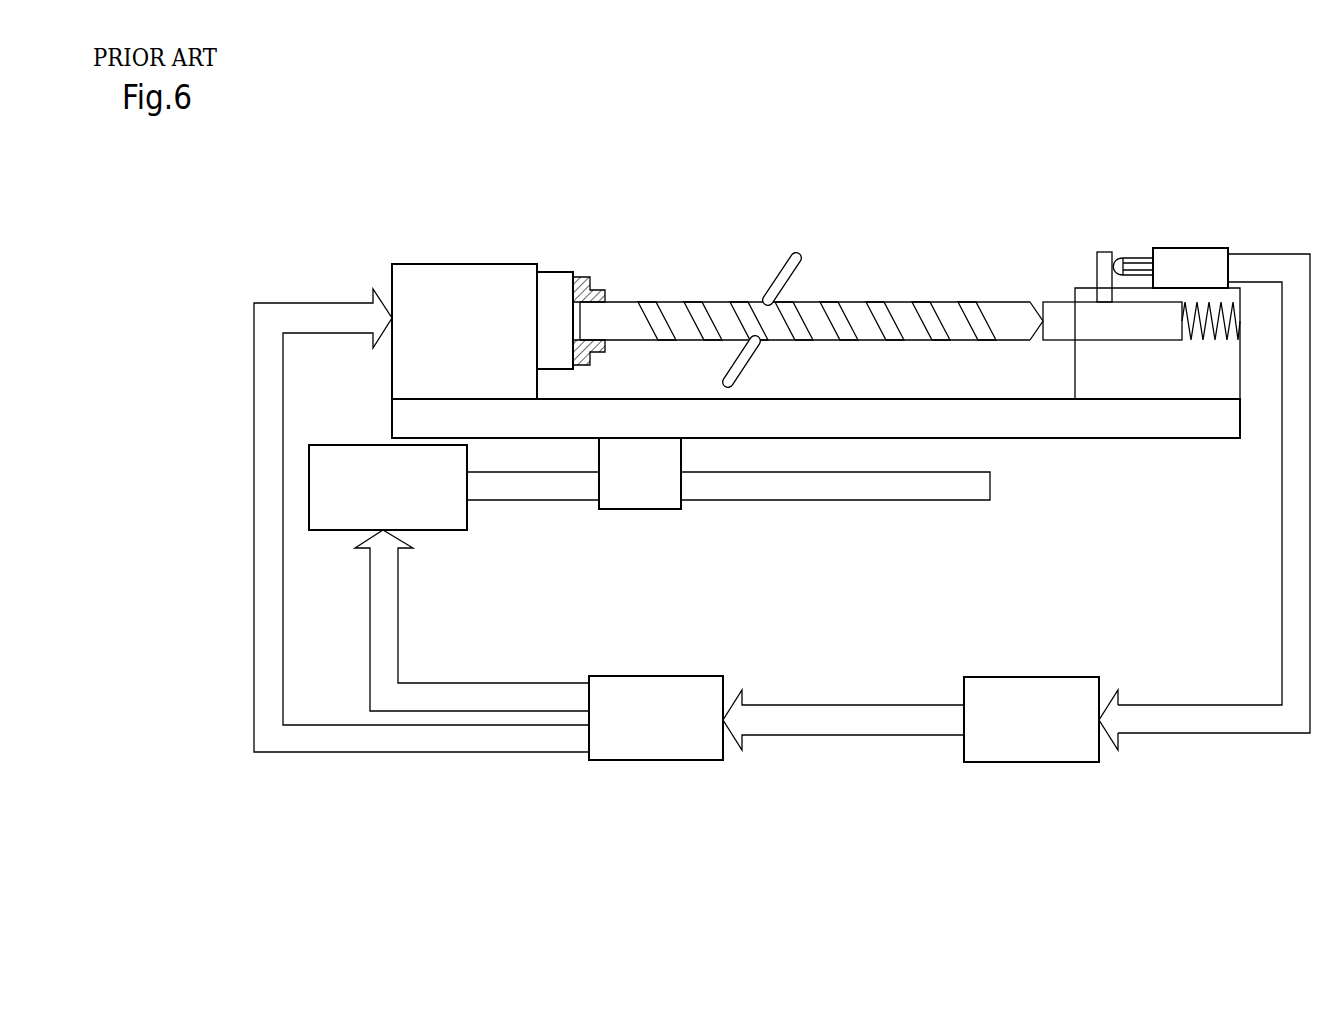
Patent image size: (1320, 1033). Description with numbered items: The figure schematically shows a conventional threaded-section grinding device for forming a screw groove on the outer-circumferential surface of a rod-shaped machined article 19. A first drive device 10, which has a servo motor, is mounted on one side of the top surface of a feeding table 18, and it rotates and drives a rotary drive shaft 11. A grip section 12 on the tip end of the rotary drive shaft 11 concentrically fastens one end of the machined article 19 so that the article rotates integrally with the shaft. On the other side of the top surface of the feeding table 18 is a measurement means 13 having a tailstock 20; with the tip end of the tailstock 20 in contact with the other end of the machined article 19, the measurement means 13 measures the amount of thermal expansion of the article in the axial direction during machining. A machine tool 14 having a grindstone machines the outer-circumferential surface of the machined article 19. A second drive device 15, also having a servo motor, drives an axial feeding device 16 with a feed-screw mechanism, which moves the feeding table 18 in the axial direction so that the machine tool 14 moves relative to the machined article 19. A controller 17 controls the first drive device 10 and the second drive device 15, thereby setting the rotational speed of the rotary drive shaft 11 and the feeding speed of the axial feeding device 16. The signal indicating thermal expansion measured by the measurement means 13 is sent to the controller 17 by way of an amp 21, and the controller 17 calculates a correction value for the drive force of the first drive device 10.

The first drive device 10 is at (456, 277).
The rotary drive shaft 11 is at (553, 280).
The grip section 12 is at (585, 278).
The measurement means 13 is at (1207, 268).
The machine tool 14 is at (797, 255).
The second drive device 15 is at (427, 520).
The axial feeding device 16 is at (641, 500).
The controller 17 is at (657, 745).
The feeding table 18 is at (868, 416).
The machined article 19 is at (900, 318).
The tailstock 20 is at (1133, 318).
The amp 21 is at (1032, 745).